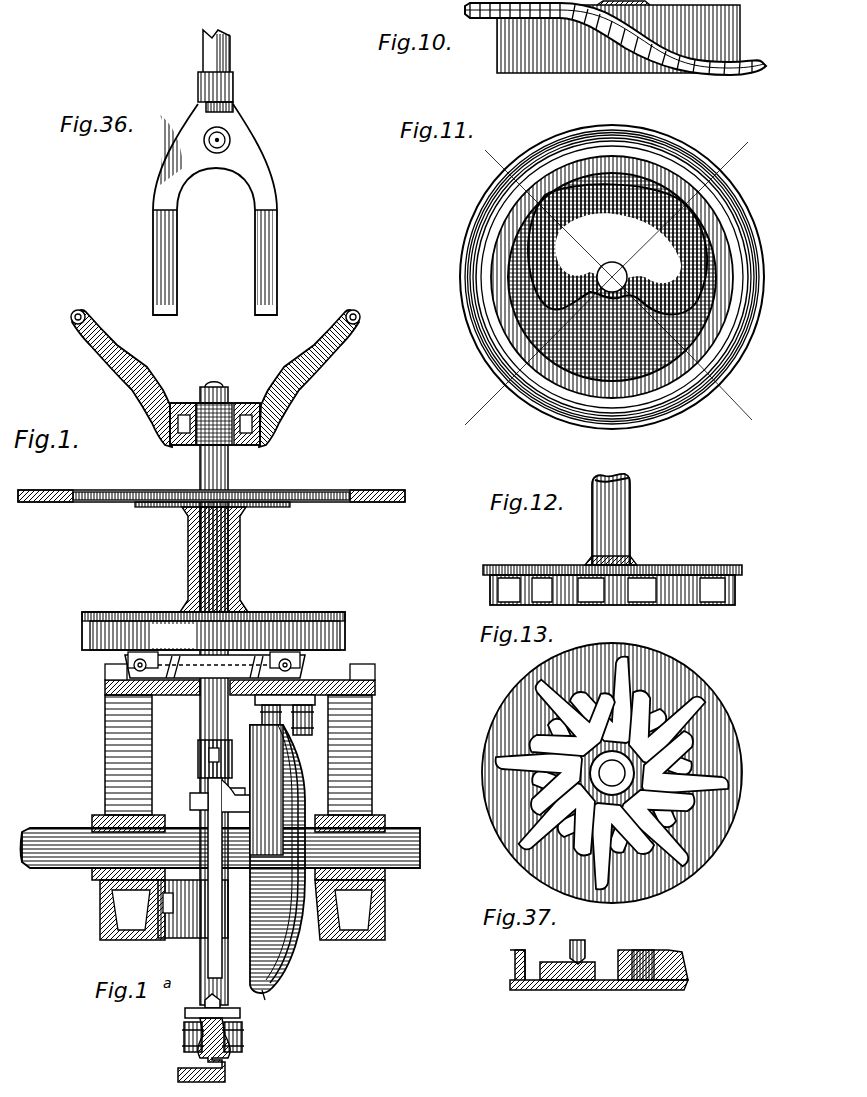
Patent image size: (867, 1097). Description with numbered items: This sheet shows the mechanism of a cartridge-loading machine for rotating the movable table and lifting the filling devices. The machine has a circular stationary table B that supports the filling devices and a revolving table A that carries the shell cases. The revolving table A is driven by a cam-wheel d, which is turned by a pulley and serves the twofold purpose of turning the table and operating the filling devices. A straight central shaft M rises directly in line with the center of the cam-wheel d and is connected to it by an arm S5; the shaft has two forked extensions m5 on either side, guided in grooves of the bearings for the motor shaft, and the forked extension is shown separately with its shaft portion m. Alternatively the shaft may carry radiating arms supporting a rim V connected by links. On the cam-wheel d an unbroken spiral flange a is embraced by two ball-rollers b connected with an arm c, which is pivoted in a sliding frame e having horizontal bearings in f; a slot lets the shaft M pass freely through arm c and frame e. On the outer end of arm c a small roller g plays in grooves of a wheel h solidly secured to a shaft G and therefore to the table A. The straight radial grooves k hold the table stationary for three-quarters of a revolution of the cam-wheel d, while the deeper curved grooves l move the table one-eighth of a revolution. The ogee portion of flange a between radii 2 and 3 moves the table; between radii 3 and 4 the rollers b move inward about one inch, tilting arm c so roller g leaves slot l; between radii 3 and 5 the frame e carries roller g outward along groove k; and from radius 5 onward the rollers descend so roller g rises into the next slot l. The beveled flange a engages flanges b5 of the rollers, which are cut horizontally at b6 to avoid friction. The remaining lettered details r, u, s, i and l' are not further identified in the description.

In FIG. 36, the shaft of fork m is at (256, 62).
In FIG. 36, the forked extensions m5 is at (228, 209).
In FIG. 1, the forked extensions m5 is at (207, 859).
In FIG. 36, the arm S5 is at (227, 146).
In FIG. 1, the arm S5 is at (247, 796).
In FIG. 10, the spiral flange a is at (658, 40).
In FIG. 1, the spiral flange a is at (284, 859).
In FIG. 1A, the spiral flange a is at (228, 1058).
In FIG. 10, the cam-wheel d is at (618, 37).
In FIG. 11, the cam-wheel d is at (612, 278).
In FIG. 11, the rim / ring r is at (612, 276).
In FIG. 1, the rim / ring r is at (372, 748).
In FIG. 11, the hatched disk u is at (595, 277).
In FIG. 11, the radius 2 is at (683, 201).
In FIG. 11, the radius 3 is at (545, 207).
In FIG. 11, the radius 4 is at (538, 354).
In FIG. 11, the radius 5 is at (686, 353).
In FIG. 1, the rim V is at (215, 378).
In FIG. 1, the central shaft M is at (215, 693).
In FIG. 1, the revolving table A is at (211, 489).
In FIG. 1, the stationary table B is at (211, 486).
In FIG. 1, the shaft G is at (240, 562).
In FIG. 1, the wheel h is at (213, 631).
In FIG. 12, the wheel h is at (612, 524).
In FIG. 13, the wheel h is at (700, 675).
In FIG. 1, the arm c is at (215, 666).
In FIG. 1, the small roller g is at (128, 658).
In FIG. 37, the small roller g is at (588, 946).
In FIG. 1, the horizontal bearings f is at (105, 684).
In FIG. 1, the sliding frame e is at (105, 708).
In FIG. 1, the ball-rollers b is at (285, 715).
In FIG. 1, the rack end s is at (250, 988).
In FIG. 1A, the flanges of the rollers b5 is at (184, 1030).
In FIG. 1A, the horizontal cut b6 is at (242, 1040).
In FIG. 12, the openings in plate i is at (612, 590).
In FIG. 13, the curved grooves l is at (600, 772).
In FIG. 37, the curved grooves l is at (649, 954).
In FIG. 13, the straight grooves k is at (614, 796).
In FIG. 37, the straight grooves k is at (542, 985).
In FIG. 37, the recess l' is at (563, 954).